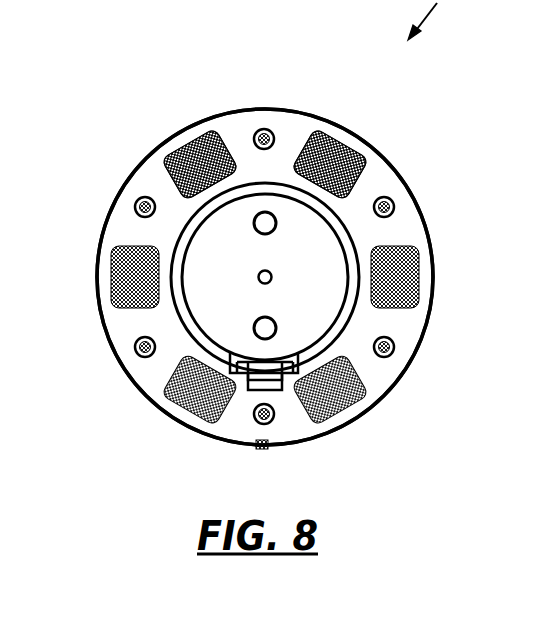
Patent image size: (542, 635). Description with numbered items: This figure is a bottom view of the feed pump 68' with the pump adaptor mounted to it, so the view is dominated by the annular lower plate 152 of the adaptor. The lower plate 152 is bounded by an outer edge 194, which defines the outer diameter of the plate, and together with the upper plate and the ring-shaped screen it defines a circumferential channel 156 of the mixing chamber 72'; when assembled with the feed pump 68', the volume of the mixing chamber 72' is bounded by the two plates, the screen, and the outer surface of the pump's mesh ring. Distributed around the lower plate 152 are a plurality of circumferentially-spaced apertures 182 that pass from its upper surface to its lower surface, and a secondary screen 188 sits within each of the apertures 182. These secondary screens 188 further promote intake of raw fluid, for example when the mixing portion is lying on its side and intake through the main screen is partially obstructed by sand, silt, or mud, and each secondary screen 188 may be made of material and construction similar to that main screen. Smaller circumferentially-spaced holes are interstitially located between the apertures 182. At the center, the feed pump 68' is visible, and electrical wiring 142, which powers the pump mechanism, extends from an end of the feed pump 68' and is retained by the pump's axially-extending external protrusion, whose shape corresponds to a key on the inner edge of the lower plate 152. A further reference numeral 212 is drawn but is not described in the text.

The circumferentially-spaced apertures 182 is at (307, 138).
The secondary screen 188 is at (197, 140).
The circumferential channel 156 is at (148, 235).
The outer edge 194 is at (388, 165).
The mixing chamber 72' is at (84, 327).
The lower plate 152 is at (125, 388).
The feed pump 68' is at (228, 328).
The fastener holes 212 is at (395, 203).
The electrical wiring 142 is at (267, 447).